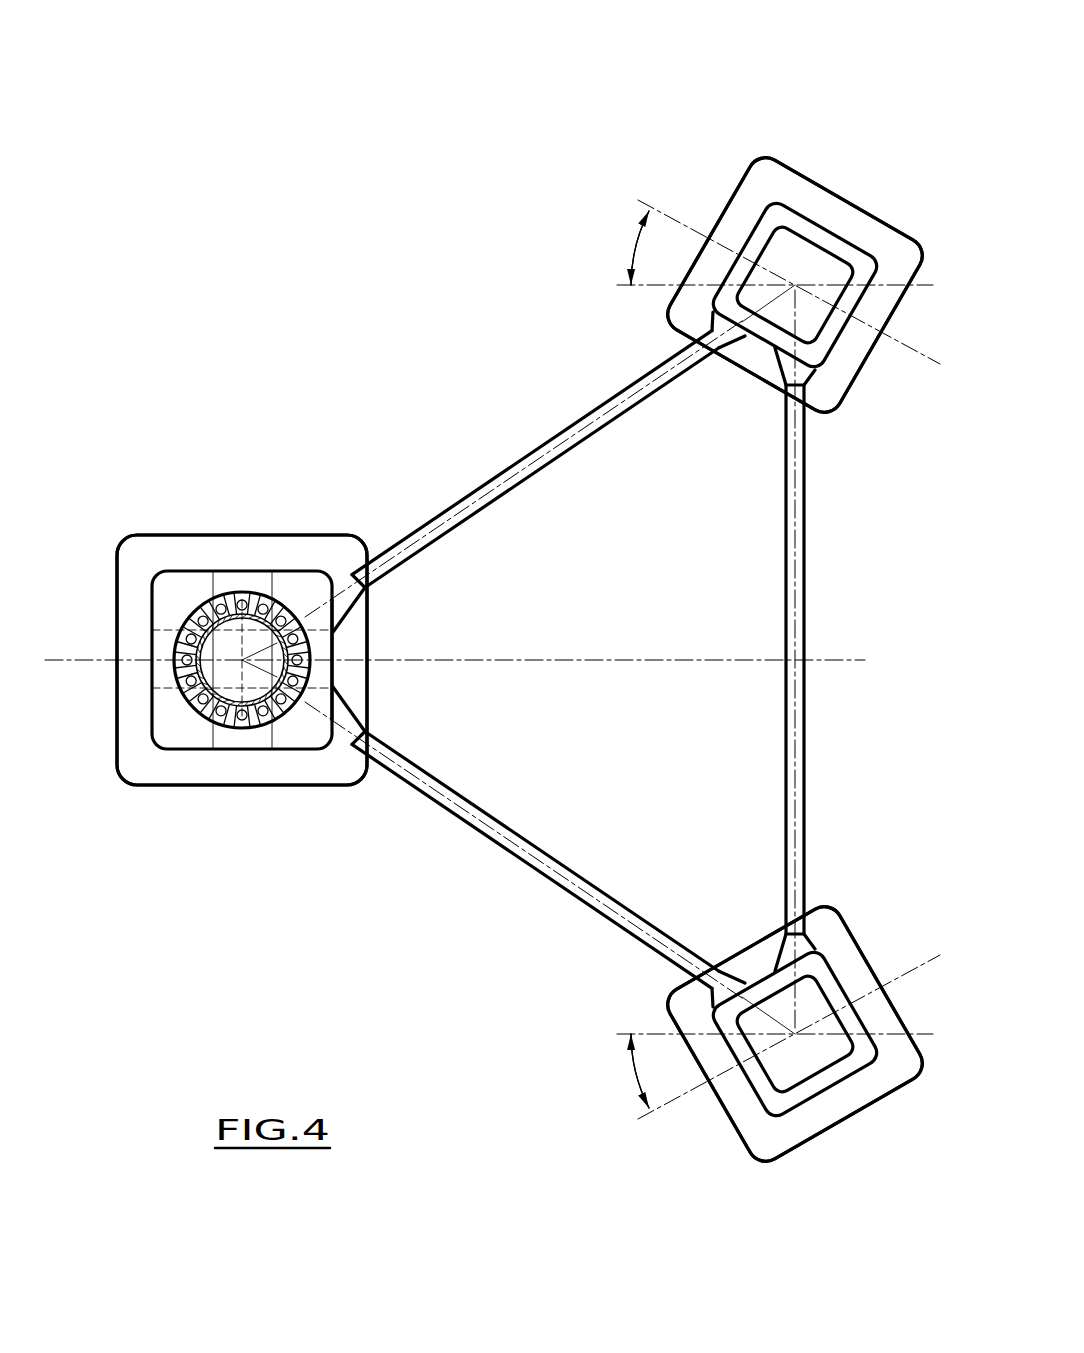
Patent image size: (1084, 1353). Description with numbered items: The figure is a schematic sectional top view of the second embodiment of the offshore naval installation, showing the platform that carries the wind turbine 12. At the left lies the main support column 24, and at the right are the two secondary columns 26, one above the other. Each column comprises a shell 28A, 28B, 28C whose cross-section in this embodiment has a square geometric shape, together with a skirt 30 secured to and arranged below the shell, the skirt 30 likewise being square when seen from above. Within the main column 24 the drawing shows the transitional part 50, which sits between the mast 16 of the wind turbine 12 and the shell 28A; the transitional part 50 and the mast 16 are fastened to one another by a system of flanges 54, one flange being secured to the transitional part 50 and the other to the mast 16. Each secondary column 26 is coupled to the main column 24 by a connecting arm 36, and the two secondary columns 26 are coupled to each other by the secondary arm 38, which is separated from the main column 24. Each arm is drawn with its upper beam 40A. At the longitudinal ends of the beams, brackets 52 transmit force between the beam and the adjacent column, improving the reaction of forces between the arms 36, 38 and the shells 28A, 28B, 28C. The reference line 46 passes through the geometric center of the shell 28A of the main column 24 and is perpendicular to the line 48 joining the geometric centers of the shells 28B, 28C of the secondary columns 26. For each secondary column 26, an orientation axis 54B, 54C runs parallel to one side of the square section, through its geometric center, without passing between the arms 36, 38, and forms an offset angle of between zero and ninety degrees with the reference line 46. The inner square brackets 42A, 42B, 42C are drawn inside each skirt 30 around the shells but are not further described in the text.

The wind turbine 12 is at (166, 671).
The mast 16 is at (180, 688).
The main support column 24 is at (254, 646).
The secondary columns 26 is at (777, 653).
The shell 28A is at (177, 734).
The shell 28B is at (868, 1019).
The shell 28C is at (830, 230).
The skirt 30 is at (255, 533).
The connecting arm 36 is at (560, 428).
The secondary arm 38 is at (861, 660).
The upper beam 40A is at (505, 470).
The first bracket 42A is at (262, 755).
The second bracket 42B is at (845, 982).
The third bracket 42C is at (798, 208).
The reference line 46 is at (576, 662).
The line 48 is at (797, 705).
The transitional part 50 is at (333, 653).
The bracket 52 is at (352, 608).
The system of flanges 54 is at (198, 718).
The orientation axis 54B is at (685, 1098).
The orientation axis 54C is at (658, 210).